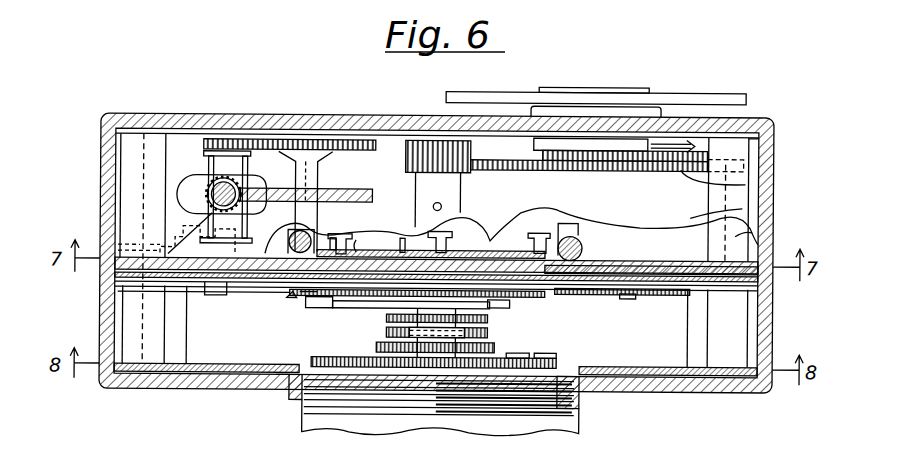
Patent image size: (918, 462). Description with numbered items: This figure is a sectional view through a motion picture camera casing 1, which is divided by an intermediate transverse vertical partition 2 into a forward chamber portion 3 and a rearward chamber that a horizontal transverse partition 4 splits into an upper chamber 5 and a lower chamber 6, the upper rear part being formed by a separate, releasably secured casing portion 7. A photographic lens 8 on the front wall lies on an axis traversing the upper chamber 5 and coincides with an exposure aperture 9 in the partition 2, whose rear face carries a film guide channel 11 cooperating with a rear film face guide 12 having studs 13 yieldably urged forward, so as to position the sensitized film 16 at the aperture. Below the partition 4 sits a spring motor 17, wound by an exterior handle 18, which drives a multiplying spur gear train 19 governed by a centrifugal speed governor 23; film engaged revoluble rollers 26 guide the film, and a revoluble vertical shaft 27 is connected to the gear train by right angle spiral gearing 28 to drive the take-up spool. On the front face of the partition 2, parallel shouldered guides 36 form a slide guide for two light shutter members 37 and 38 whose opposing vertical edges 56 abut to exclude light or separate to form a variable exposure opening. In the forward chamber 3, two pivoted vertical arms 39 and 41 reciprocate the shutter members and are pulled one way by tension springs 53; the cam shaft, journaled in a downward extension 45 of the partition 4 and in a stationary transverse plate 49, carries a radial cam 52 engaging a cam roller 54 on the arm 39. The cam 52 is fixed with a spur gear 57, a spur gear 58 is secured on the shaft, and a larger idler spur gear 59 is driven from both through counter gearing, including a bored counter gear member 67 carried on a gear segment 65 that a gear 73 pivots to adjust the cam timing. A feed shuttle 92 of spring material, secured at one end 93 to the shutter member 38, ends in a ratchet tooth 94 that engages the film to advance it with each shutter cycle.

The camera casing 1 is at (152, 392).
The intermediate transverse vertical partition 2 is at (765, 276).
The forward chamber portion 3 is at (735, 346).
The horizontal transverse partition 4 is at (760, 232).
The upper chamber 5 is at (746, 254).
The lower chamber 6 is at (752, 206).
The separate casing portion 7 is at (770, 132).
The photographic lens 8 is at (303, 422).
The exposure aperture 9 is at (482, 257).
The film guide channel 11 is at (602, 262).
The rear film face guide 12 is at (385, 250).
The studs 13 is at (360, 224).
The sensitized film 16 is at (452, 252).
The spring motor 17 is at (758, 168).
The exterior handle 18 is at (612, 96).
The multiplying spur gear train 19 is at (425, 146).
The centrifugal speed governor 23 is at (180, 192).
The film engaged revoluble rollers 26 is at (575, 232).
The revoluble vertical shaft 27 is at (210, 172).
The right angle spiral gearing 28 is at (255, 188).
The parallel shouldered guides 36 is at (145, 290).
The light shutter member 37 is at (140, 262).
The light shutter member 38 is at (508, 294).
The vertical arm 39 is at (232, 298).
The vertical arm 41 is at (497, 244).
The downward extension 45 is at (370, 135).
The stationary transverse plate 49 is at (224, 392).
The radial cam 52 is at (338, 308).
The tension springs 53 is at (305, 300).
The cam roller 54 is at (318, 310).
The opposing vertical edges 56 is at (332, 212).
The spur gear 57 is at (386, 316).
The spur gear 58 is at (386, 332).
The idler spur gear 59 is at (496, 346).
The gear segment 65 is at (362, 372).
The bored counter gear member 67 is at (420, 365).
The gear 73 is at (560, 357).
The feed shuttle 92 is at (410, 250).
The shuttle mounting 93 is at (542, 232).
The ratchet tooth 94 is at (385, 238).